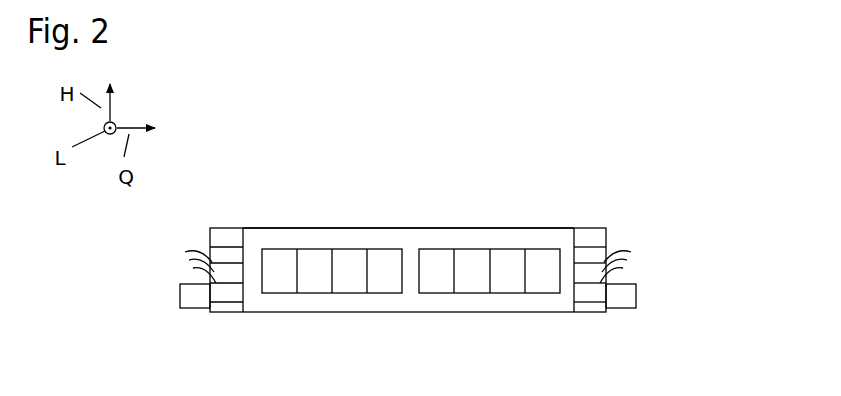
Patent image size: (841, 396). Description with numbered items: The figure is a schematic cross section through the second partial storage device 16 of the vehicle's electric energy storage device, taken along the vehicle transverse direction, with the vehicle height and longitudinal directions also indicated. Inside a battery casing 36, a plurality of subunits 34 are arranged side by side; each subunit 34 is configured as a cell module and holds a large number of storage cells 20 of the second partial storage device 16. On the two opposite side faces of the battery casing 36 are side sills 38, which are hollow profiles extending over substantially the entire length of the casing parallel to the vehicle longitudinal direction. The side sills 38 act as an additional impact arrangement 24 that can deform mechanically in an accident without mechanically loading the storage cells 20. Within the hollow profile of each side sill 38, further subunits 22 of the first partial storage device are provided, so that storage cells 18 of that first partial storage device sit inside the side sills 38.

The second partial storage device 16 is at (373, 168).
The storage cell 18 is at (409, 264).
The storage cell 20 is at (380, 283).
The subunit 22 is at (195, 205).
The impact arrangement 24 is at (210, 314).
The subunit 34 is at (285, 249).
The battery casing 36 is at (433, 228).
The side sill 38 is at (228, 228).